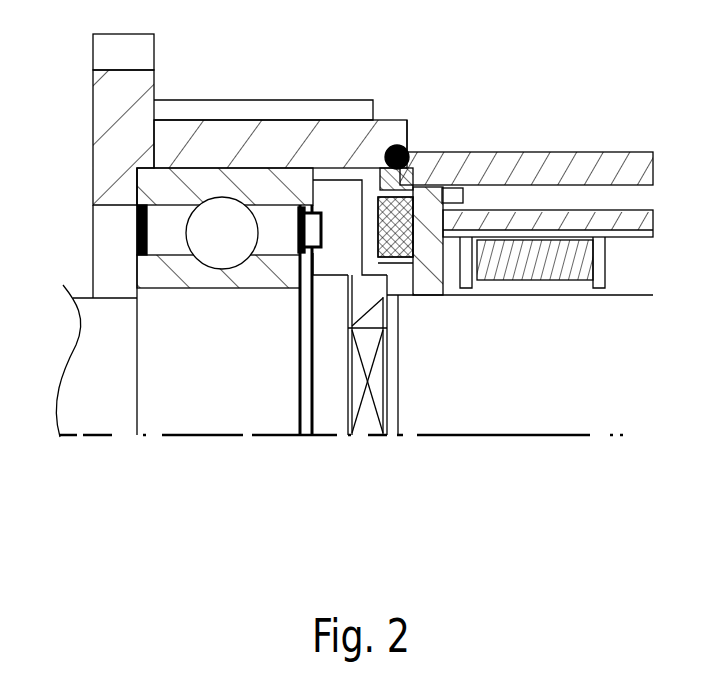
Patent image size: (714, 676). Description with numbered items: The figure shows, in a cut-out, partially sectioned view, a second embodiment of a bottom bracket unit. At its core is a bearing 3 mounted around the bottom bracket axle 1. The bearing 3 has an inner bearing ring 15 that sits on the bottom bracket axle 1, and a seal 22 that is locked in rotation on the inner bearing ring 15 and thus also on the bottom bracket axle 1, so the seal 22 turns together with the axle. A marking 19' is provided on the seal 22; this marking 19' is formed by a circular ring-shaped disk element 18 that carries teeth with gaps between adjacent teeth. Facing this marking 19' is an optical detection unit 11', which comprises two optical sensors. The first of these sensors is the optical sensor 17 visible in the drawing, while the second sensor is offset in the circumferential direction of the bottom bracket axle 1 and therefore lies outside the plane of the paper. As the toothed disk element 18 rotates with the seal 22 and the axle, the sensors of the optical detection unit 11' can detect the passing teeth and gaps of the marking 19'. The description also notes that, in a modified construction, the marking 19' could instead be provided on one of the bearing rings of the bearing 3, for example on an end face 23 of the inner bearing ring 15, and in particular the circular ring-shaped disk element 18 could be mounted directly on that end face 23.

The bottom bracket axle 1 is at (503, 418).
The bearing 3 is at (110, 235).
The inner bearing ring 15 is at (260, 277).
The first optical sensor 17 is at (420, 188).
The circular ring-shaped disk element 18 is at (322, 226).
The marking 19' is at (280, 154).
The optical detection unit 11' is at (447, 153).
The seal 22 is at (296, 225).
The end face 23 is at (318, 258).